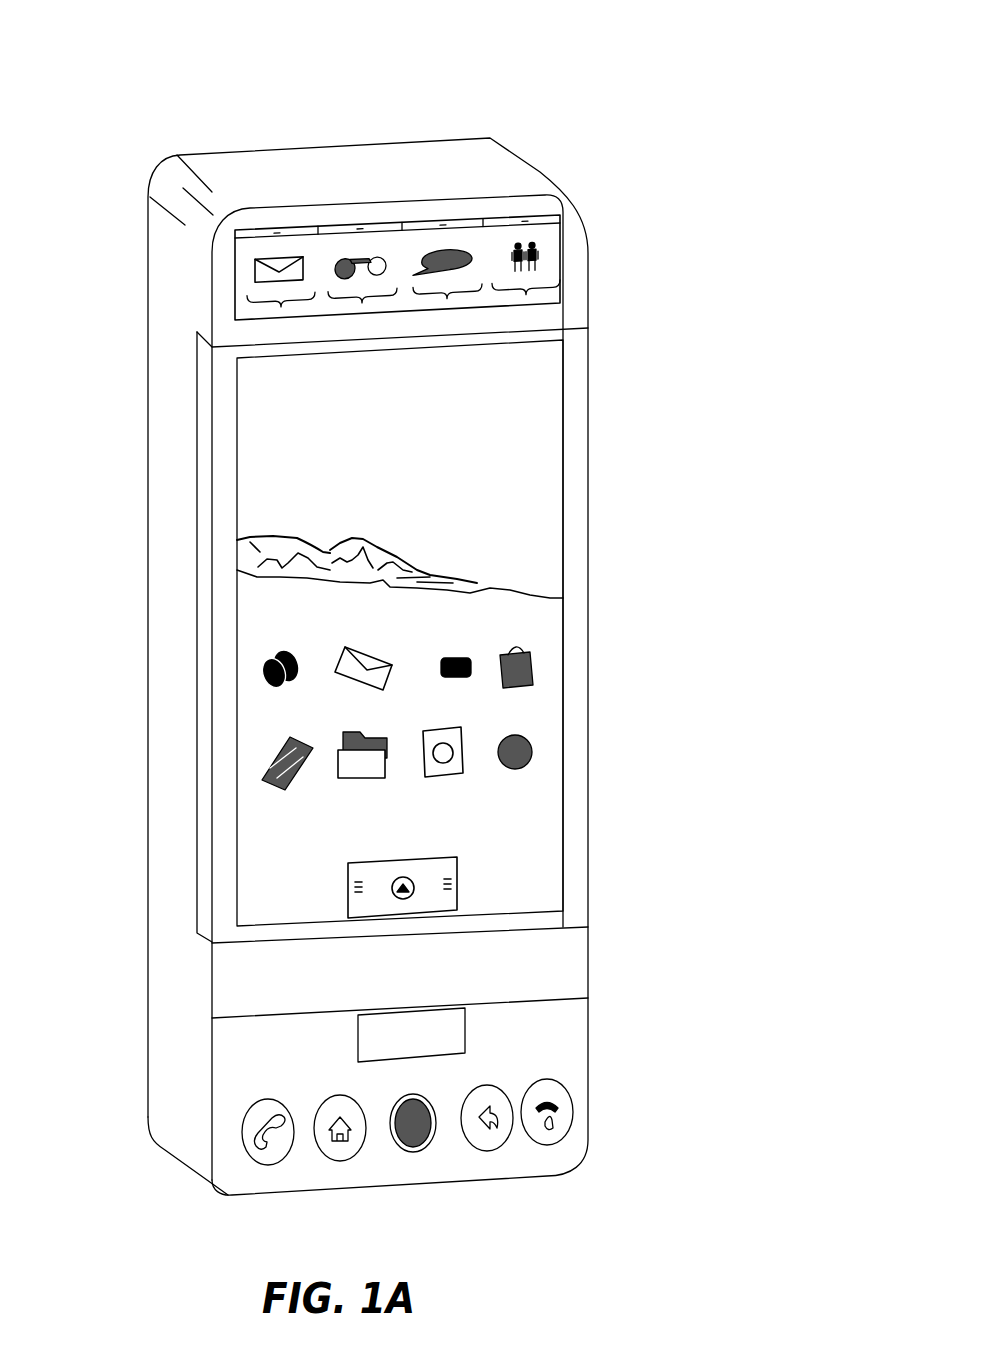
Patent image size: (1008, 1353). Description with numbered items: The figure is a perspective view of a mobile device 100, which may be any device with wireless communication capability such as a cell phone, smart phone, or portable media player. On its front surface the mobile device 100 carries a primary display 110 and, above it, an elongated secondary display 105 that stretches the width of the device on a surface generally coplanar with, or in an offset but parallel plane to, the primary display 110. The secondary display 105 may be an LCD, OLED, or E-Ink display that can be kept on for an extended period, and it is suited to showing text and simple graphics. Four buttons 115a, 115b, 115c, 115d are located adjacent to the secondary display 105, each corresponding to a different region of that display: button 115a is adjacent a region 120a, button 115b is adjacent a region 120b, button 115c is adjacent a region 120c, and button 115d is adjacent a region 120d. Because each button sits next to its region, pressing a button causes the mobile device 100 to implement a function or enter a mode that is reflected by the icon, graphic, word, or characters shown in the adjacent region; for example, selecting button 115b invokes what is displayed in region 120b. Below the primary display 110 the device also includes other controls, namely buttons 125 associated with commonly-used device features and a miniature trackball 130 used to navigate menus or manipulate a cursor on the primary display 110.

The mobile device 100 is at (680, 102).
The secondary display 105 is at (563, 263).
The primary display 110 is at (564, 453).
The button 115a is at (284, 222).
The button 115b is at (362, 218).
The button 115c is at (448, 212).
The button 115d is at (553, 210).
The region of the secondary display 120a is at (281, 307).
The region of the secondary display 120b is at (362, 303).
The region of the secondary display 120c is at (447, 298).
The region of the secondary display 120d is at (526, 295).
The buttons 125 is at (449, 1157).
The miniature trackball 130 is at (412, 1142).